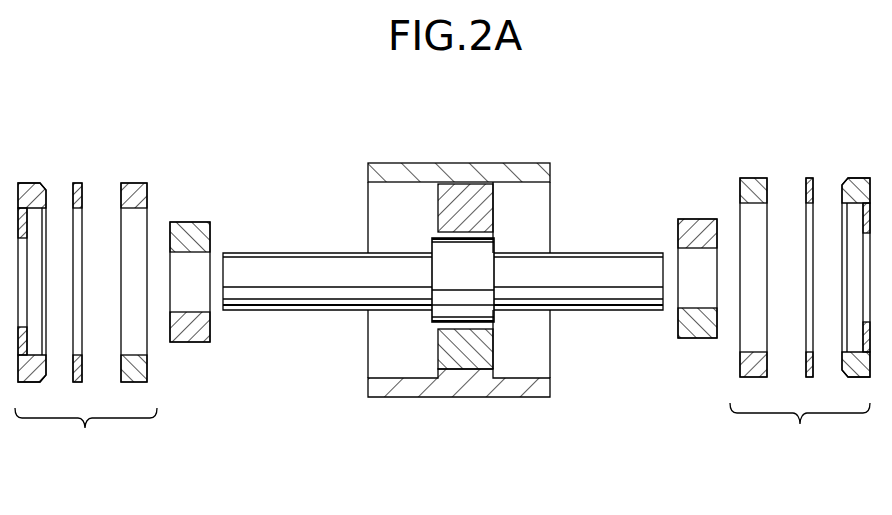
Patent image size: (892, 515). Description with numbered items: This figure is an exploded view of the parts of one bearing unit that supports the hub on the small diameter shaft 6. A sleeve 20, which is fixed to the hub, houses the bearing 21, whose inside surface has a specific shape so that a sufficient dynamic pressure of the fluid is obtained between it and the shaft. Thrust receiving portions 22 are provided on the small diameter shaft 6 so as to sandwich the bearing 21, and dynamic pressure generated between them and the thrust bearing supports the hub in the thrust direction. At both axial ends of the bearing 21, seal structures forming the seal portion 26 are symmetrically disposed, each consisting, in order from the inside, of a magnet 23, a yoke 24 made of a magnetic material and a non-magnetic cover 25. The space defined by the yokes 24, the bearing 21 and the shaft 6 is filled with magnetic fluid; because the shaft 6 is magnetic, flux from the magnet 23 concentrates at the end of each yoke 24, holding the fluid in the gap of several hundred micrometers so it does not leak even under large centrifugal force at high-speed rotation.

The small diameter shaft 6 is at (594, 302).
The sleeve 20 is at (473, 172).
The bearing 21 is at (494, 208).
The thrust receiving portion 22 is at (188, 224).
The magnet 23 is at (135, 187).
The yoke 24 is at (77, 183).
The non-magnetic cover 25 is at (23, 183).
The seal portion 26 is at (442, 433).